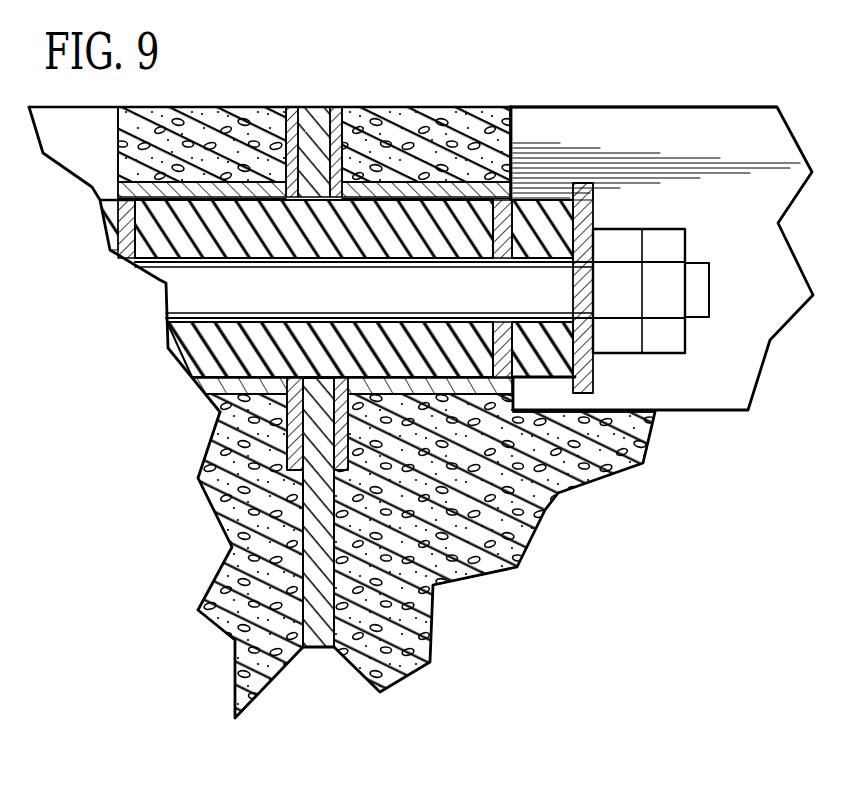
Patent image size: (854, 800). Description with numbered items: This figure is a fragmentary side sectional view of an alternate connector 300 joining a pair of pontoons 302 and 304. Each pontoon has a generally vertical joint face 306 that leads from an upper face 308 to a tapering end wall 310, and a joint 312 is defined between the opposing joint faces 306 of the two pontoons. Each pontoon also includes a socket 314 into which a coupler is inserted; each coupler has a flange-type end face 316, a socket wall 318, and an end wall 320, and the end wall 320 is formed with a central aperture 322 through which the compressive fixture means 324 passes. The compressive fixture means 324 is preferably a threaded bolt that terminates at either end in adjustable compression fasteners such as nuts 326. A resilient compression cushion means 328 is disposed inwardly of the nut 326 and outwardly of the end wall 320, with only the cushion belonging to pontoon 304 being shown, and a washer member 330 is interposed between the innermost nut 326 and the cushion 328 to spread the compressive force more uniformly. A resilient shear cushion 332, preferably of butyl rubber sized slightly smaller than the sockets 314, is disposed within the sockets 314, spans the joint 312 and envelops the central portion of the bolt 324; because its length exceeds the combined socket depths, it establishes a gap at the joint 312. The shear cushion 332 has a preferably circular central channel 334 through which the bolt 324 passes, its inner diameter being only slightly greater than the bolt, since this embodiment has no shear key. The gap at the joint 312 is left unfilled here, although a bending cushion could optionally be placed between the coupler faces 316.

The connector 300 is at (496, 100).
The pontoon 302 is at (160, 122).
The pontoon 304 is at (762, 210).
The joint face 306 is at (293, 470).
The upper face 308 is at (228, 107).
The tapering end wall 310 is at (355, 680).
The joint 312 is at (312, 115).
The socket 314 is at (410, 183).
The coupler end face 316 is at (338, 125).
The socket wall 318 is at (453, 185).
The end wall 320 is at (520, 200).
The central aperture 322 is at (515, 378).
The compressive fixture means 324 is at (203, 297).
The nut 326 is at (623, 345).
The resilient compression cushion means 328 is at (597, 362).
The washer member 330 is at (591, 196).
The resilient shear cushion 332 is at (167, 242).
The central channel 334 is at (217, 327).